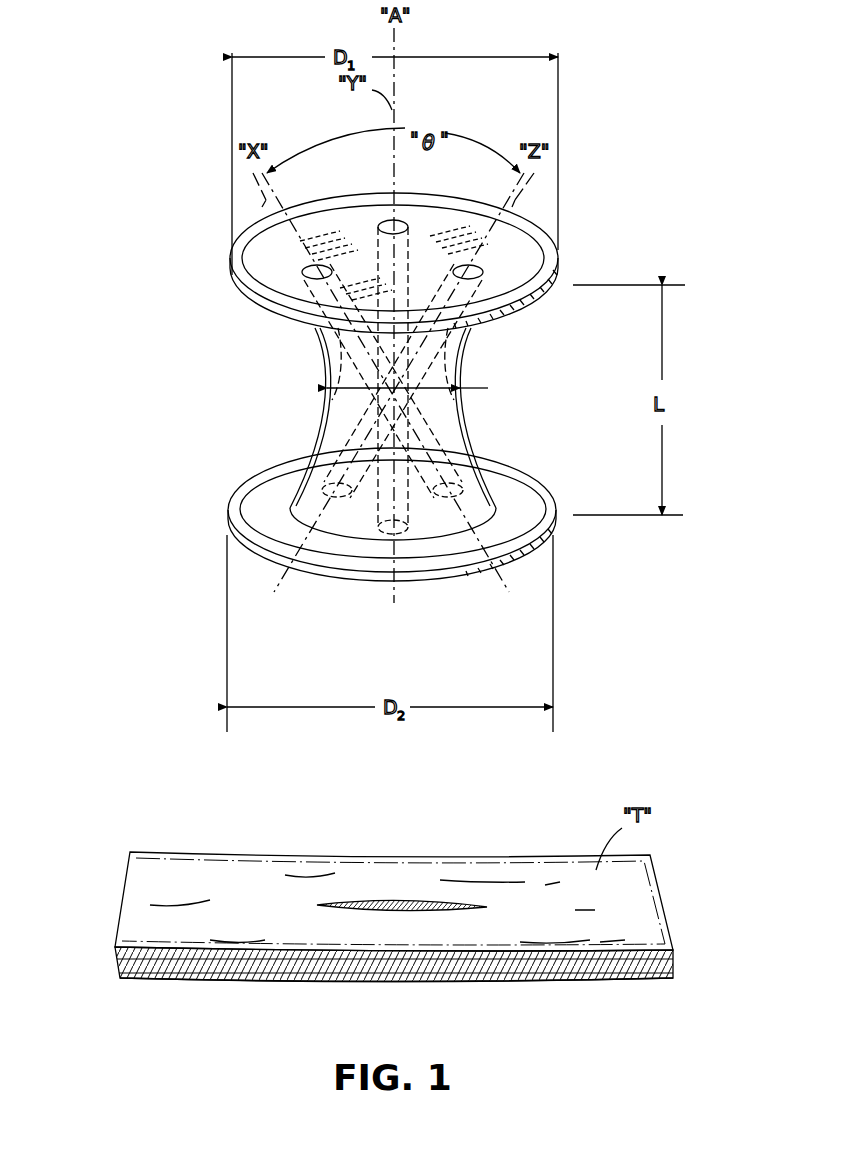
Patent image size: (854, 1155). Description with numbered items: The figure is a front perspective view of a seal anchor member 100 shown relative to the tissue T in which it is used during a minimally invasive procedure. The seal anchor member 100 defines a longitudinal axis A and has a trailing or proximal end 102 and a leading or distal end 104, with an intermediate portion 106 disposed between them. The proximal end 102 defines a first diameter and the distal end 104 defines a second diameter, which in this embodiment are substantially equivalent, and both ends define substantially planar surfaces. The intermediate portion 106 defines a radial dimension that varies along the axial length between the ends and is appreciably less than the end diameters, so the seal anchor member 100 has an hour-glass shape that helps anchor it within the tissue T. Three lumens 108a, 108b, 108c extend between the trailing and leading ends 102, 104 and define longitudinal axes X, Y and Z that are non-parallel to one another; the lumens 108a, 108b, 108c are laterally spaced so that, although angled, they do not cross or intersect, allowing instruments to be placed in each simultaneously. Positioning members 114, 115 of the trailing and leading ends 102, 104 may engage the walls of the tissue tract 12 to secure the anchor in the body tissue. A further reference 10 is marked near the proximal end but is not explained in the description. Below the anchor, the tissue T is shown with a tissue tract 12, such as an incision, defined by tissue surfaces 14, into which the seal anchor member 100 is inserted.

The seal anchor member 100 is at (157, 222).
The implant 10 is at (537, 210).
The trailing end 102 is at (260, 262).
The leading end 104 is at (438, 583).
The intermediate portion 106 is at (323, 358).
The lumen 108a is at (317, 264).
The lumen 108b is at (398, 224).
The lumen 108c is at (466, 264).
The positioning member 114 is at (550, 263).
The positioning member 115 is at (545, 493).
The tissue tract 12 is at (400, 905).
The tissue surfaces 14 is at (418, 973).